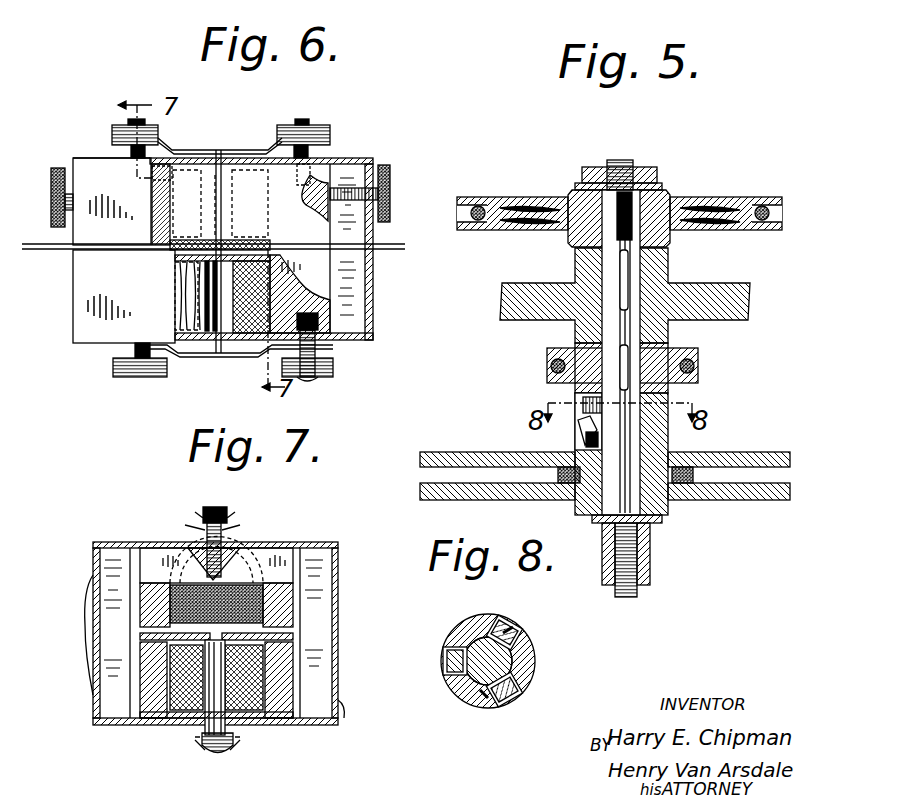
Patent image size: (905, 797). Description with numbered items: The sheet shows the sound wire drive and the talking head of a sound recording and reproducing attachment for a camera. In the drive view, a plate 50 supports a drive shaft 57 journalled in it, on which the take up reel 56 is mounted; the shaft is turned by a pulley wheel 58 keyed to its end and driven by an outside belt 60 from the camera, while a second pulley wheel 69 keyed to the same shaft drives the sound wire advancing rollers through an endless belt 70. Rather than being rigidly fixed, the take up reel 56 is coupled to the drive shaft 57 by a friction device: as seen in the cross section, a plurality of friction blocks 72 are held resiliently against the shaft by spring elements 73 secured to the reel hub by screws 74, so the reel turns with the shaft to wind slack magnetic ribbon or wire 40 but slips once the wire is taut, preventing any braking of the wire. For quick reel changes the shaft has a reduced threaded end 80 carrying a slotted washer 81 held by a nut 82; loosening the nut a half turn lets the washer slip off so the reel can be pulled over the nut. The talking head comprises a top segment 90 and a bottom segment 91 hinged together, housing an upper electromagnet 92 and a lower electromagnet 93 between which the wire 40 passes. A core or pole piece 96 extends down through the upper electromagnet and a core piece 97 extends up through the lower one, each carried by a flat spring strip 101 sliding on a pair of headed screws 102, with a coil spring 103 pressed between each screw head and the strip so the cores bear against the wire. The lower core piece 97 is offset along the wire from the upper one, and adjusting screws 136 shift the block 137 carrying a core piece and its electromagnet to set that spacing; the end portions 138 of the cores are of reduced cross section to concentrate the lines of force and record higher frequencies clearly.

In FIG. 6, the magnetic ribbon or wire 40 is at (405, 246).
In FIG. 5, the magnetic ribbon or wire 40 is at (690, 478).
In FIG. 7, the magnetic ribbon or wire 40 is at (293, 636).
In FIG. 5, the plate 50 is at (545, 295).
In FIG. 5, the take up reel 56 is at (440, 460).
In FIG. 8, the take up reel 56 is at (528, 655).
In FIG. 5, the drive shaft 57 is at (627, 272).
In FIG. 8, the drive shaft 57 is at (460, 696).
In FIG. 5, the pulley wheel 58 is at (742, 197).
In FIG. 5, the outside belt 60 is at (470, 213).
In FIG. 5, the pulley wheel 69 is at (690, 355).
In FIG. 5, the endless belt 70 is at (553, 366).
In FIG. 5, the friction blocks 72 is at (583, 400).
In FIG. 8, the friction blocks 72 is at (458, 640).
In FIG. 5, the spring elements 73 is at (588, 415).
In FIG. 8, the spring elements 73 is at (512, 630).
In FIG. 5, the screws 74 is at (586, 440).
In FIG. 5, the threaded ends 80 is at (652, 583).
In FIG. 5, the slotted washer 81 is at (660, 522).
In FIG. 5, the nut 82 is at (606, 582).
In FIG. 6, the top segment 90 is at (355, 160).
In FIG. 7, the top segment 90 is at (315, 545).
In FIG. 6, the bottom segment 91 is at (372, 325).
In FIG. 7, the bottom segment 91 is at (325, 727).
In FIG. 7, the upper electromagnet 92 is at (255, 580).
In FIG. 6, the lower electromagnet 93 is at (250, 332).
In FIG. 7, the lower electromagnet 93 is at (258, 722).
In FIG. 6, the core or pole piece 96 is at (225, 185).
In FIG. 6, the core piece 97 is at (223, 292).
In FIG. 7, the core piece 97 is at (196, 722).
In FIG. 6, the flat spring strip 101 is at (180, 150).
In FIG. 7, the flat spring strip 101 is at (200, 527).
In FIG. 6, the screws 102 is at (130, 150).
In FIG. 7, the screws 102 is at (222, 540).
In FIG. 7, the coil spring 103 is at (228, 517).
In FIG. 6, the adjusting screws 136 is at (57, 166).
In FIG. 6, the block 137 is at (320, 230).
In FIG. 7, the end portions 138 is at (270, 620).